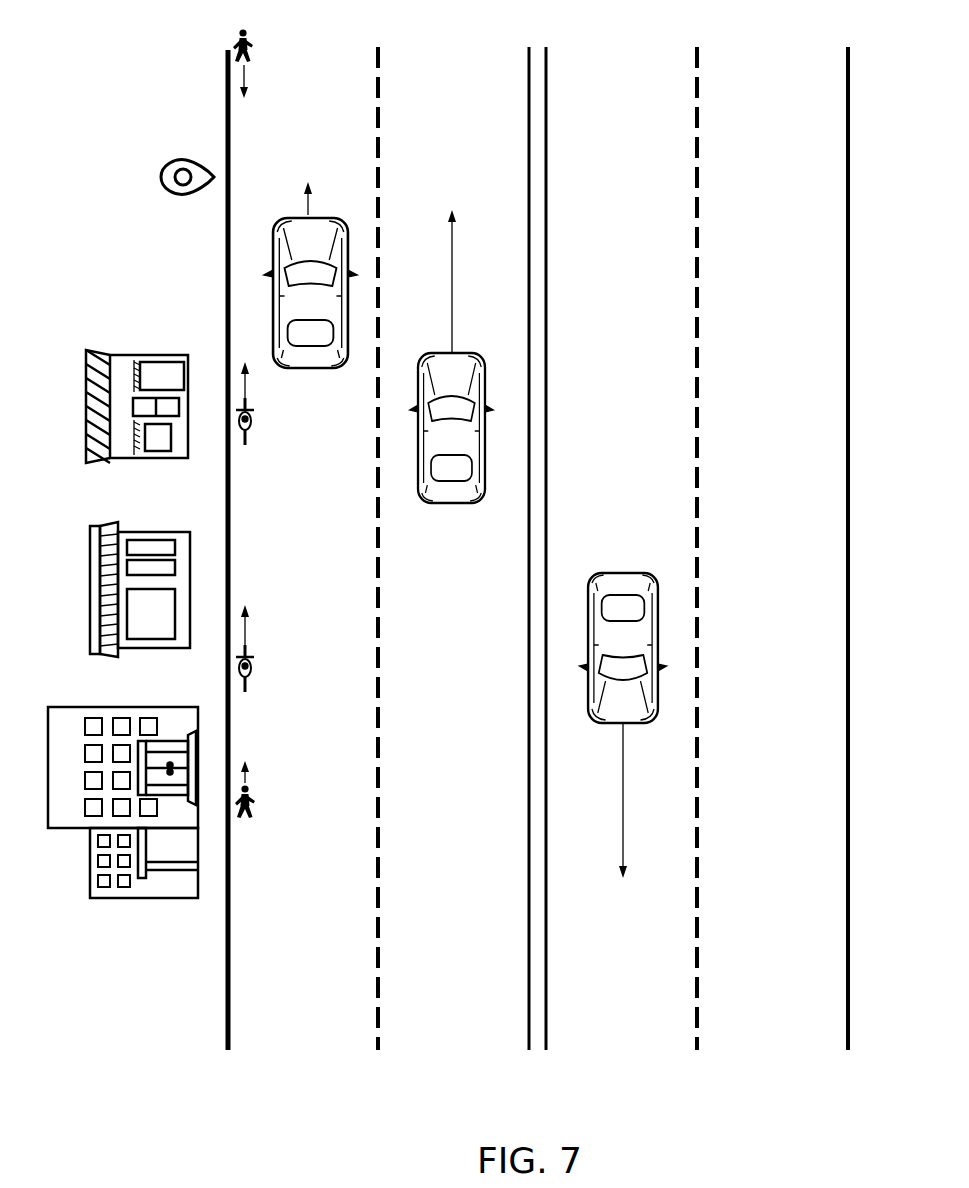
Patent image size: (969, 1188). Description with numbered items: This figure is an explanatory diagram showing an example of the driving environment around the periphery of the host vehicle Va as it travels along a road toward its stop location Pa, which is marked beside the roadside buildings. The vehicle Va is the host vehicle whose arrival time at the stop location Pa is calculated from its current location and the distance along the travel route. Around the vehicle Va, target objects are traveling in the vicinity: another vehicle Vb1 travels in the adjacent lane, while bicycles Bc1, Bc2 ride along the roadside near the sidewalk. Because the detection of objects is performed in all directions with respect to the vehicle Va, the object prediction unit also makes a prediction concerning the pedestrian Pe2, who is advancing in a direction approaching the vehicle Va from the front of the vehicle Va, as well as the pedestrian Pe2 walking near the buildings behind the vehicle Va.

The stop location Pa is at (184, 160).
The pedestrian Pe2 is at (250, 50).
The vehicle Va is at (297, 306).
The bicycle Bc1 is at (253, 420).
The bicycle Bc2 is at (253, 665).
The other vehicle Vb1 is at (485, 446).